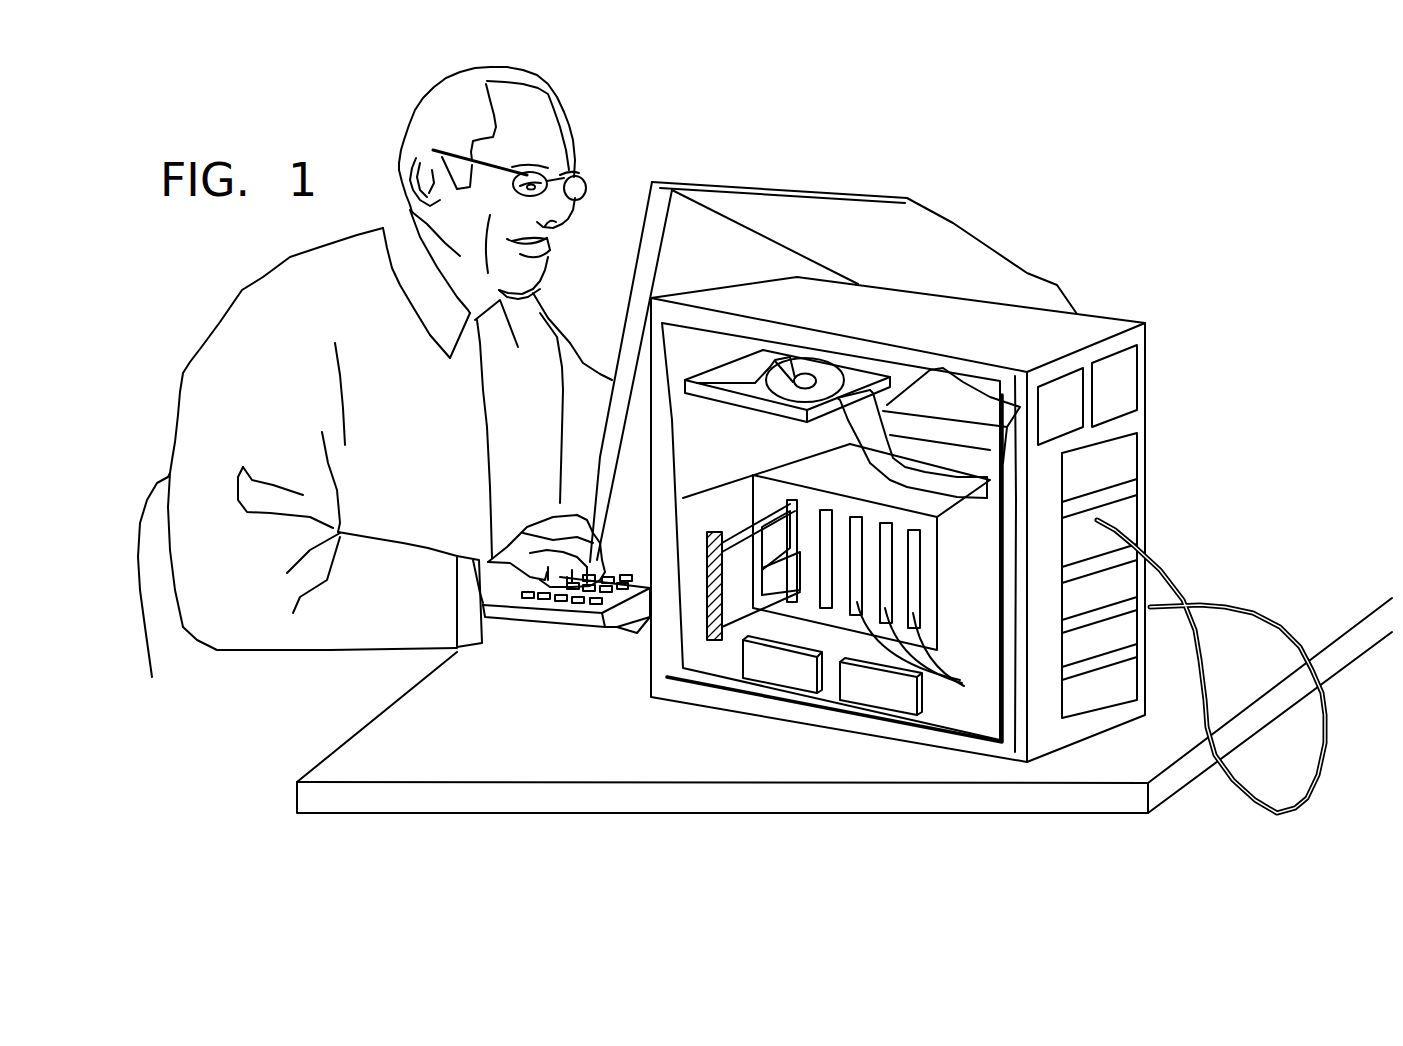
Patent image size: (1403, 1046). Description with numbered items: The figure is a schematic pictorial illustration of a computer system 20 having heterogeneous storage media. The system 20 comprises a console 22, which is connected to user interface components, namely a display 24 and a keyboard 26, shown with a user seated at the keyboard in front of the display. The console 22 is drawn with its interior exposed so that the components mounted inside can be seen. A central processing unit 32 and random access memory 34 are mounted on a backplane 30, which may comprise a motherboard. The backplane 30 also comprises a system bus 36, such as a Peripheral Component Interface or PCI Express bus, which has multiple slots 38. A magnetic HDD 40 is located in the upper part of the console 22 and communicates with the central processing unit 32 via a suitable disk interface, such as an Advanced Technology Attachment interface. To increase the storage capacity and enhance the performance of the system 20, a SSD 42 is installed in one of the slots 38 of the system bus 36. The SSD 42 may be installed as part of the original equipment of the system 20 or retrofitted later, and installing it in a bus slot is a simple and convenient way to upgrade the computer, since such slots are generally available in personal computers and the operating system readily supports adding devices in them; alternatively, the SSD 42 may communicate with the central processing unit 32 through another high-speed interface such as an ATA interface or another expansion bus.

The computer system 20 is at (1107, 195).
The console 22 is at (1085, 333).
The display 24 is at (873, 218).
The keyboard 26 is at (563, 614).
The backplane 30 is at (935, 423).
The central processing unit 32 is at (757, 682).
The random access memory 34 is at (862, 702).
The system bus 36 is at (805, 468).
The slots 38 is at (918, 661).
The magnetic HDD 40 is at (800, 370).
The SSD 42 is at (707, 531).